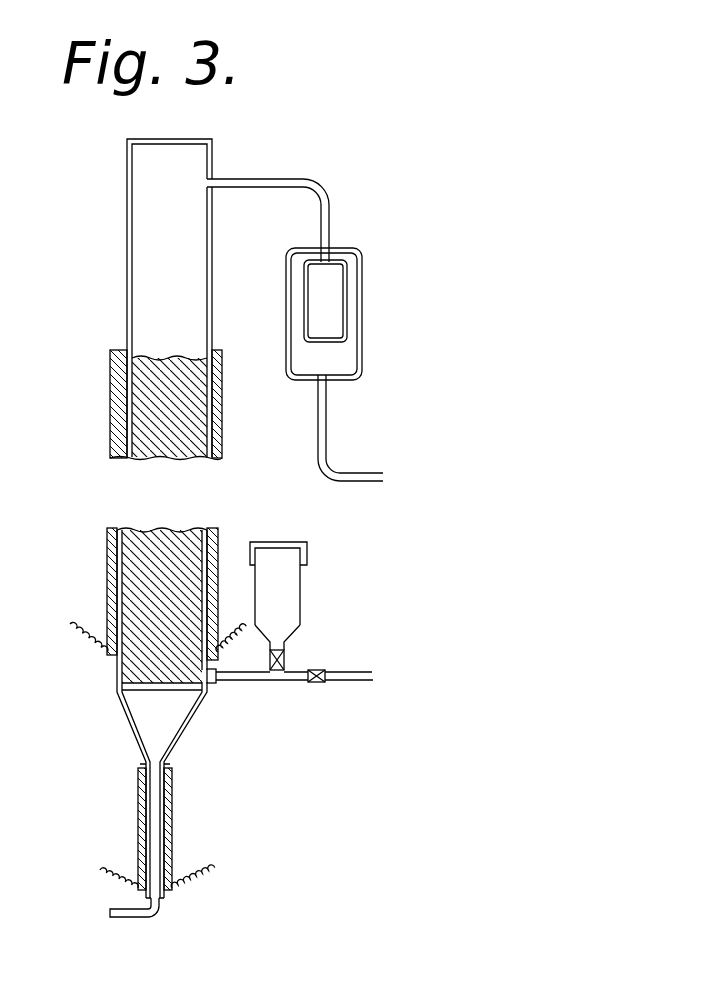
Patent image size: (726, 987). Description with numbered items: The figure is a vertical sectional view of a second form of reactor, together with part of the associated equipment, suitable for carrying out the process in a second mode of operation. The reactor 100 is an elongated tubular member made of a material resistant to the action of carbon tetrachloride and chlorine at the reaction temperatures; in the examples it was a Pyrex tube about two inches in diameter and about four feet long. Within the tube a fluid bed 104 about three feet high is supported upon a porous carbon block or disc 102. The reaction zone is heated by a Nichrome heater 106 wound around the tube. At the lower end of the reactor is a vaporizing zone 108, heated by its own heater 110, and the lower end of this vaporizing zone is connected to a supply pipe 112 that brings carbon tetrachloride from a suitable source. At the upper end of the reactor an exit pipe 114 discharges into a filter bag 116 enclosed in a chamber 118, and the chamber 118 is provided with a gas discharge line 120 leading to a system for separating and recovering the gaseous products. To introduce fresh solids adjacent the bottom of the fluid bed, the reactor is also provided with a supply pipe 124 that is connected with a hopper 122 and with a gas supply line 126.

The reactor 100 is at (211, 310).
The porous carbon block or disc 102 is at (186, 697).
The fluid bed 104 is at (189, 547).
The Nichrome heater 106 is at (215, 426).
The vaporizing zone 108 is at (163, 826).
The heater 110 is at (172, 849).
The supply pipe 112 is at (122, 918).
The exit pipe 114 is at (284, 181).
The filter bag 116 is at (348, 276).
The chamber 118 is at (363, 310).
The gas discharge line 120 is at (326, 443).
The hopper 122 is at (290, 595).
The supply pipe 124 is at (255, 684).
The gas supply line 126 is at (349, 676).